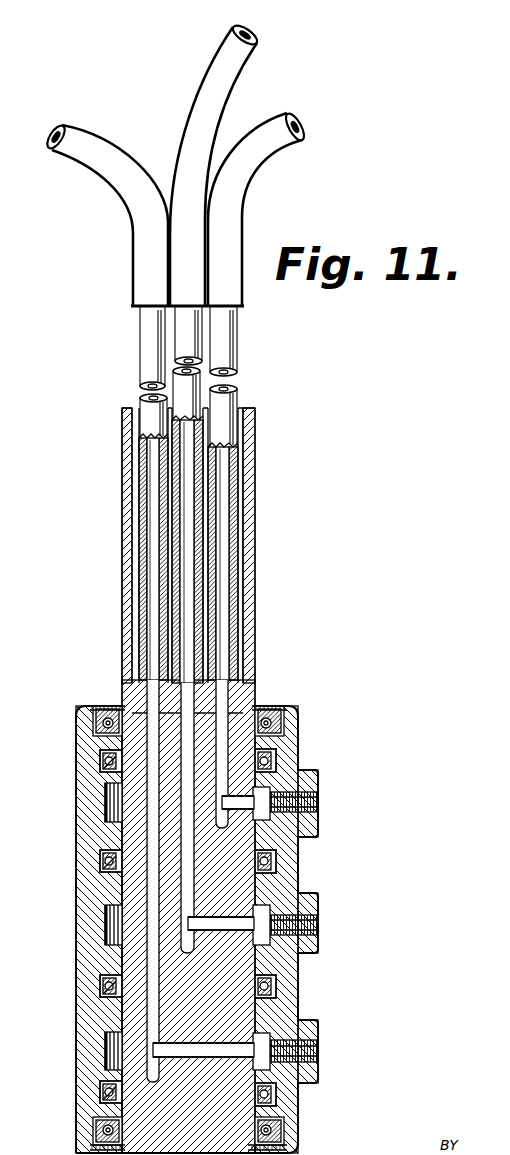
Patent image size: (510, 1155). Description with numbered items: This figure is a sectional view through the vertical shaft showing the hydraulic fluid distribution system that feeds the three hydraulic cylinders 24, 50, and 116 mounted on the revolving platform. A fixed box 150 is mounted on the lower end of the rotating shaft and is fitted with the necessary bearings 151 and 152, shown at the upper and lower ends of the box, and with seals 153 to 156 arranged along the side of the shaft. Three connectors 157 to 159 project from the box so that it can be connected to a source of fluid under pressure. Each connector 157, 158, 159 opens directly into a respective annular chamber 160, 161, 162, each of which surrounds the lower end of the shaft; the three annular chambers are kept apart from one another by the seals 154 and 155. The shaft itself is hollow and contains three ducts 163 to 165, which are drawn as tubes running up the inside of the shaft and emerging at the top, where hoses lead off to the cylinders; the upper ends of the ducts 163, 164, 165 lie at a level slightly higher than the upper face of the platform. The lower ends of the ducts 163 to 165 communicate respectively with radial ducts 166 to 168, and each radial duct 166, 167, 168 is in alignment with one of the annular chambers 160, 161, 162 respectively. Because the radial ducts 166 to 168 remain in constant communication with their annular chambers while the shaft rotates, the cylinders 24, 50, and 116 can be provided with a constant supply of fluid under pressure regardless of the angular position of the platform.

The hydraulic cylinder 24 is at (253, 32).
The hydraulic cylinder 50 is at (50, 142).
The hydraulic cylinder 116 is at (302, 119).
The fixed box 150 is at (84, 728).
The bearing 151 is at (288, 726).
The bearing 152 is at (286, 1132).
The seal 153 is at (98, 760).
The seal 154 is at (98, 860).
The seal 155 is at (98, 988).
The seal 156 is at (98, 1092).
The connector 157 is at (319, 801).
The connector 158 is at (319, 926).
The connector 159 is at (319, 1052).
The annular chamber 160 is at (104, 805).
The annular chamber 161 is at (104, 928).
The annular chamber 162 is at (104, 1050).
The duct 163 is at (234, 394).
The duct 164 is at (182, 378).
The duct 165 is at (145, 400).
The radial duct 166 is at (270, 792).
The radial duct 167 is at (270, 917).
The radial duct 168 is at (270, 1043).